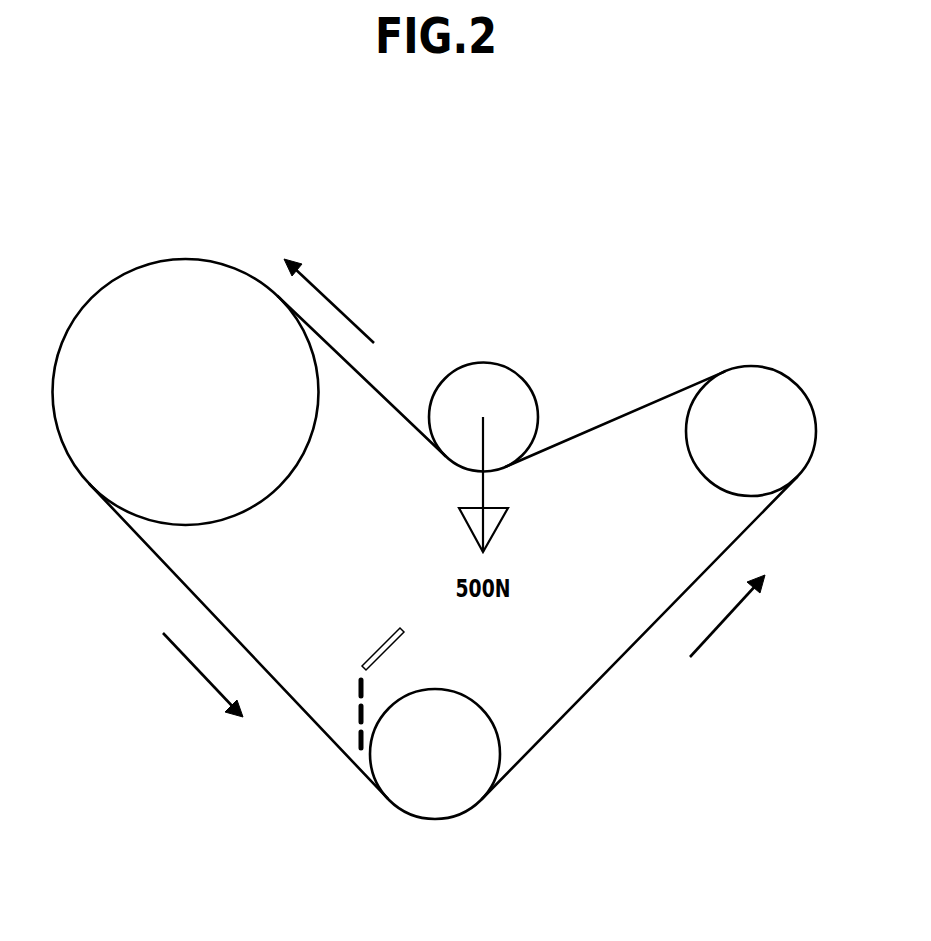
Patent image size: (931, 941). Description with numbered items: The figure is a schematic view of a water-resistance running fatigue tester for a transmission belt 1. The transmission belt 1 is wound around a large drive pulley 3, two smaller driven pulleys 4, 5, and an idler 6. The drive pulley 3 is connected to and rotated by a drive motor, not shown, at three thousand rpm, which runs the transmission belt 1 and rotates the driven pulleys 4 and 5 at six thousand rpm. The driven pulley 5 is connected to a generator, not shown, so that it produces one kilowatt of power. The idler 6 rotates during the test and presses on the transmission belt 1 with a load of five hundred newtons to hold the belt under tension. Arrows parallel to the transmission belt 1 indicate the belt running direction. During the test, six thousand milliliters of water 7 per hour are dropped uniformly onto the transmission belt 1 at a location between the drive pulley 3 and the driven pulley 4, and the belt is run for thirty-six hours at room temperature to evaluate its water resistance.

The transmission belt 1 is at (600, 683).
The drive pulley 3 is at (112, 280).
The driven pulley 4 is at (460, 820).
The driven pulley 5 is at (740, 366).
The idler 6 is at (460, 364).
The water 7 is at (350, 690).